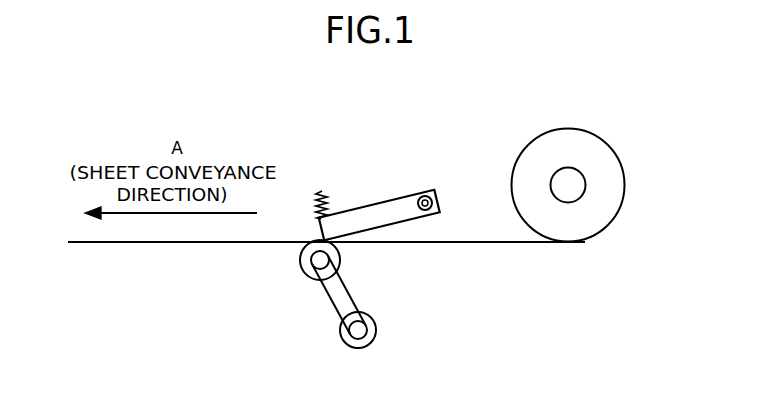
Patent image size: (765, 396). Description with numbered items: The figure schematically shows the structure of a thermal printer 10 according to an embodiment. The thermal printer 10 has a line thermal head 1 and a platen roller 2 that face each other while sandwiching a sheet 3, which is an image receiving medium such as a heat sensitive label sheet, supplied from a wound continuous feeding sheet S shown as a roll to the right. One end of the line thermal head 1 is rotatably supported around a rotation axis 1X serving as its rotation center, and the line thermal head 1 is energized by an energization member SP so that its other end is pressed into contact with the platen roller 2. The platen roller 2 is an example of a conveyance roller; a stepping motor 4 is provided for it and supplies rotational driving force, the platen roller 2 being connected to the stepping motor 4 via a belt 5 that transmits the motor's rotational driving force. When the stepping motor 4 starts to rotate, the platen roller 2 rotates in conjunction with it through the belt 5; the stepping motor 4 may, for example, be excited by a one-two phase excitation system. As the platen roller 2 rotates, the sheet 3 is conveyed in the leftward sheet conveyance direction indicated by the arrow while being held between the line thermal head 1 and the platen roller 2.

The thermal printer 10 is at (480, 110).
The line thermal head 1 is at (400, 198).
The rotation axis 1X is at (438, 198).
The energization member SP is at (323, 190).
The platen roller 2 is at (342, 257).
The sheet 3 is at (475, 243).
The stepping motor 4 is at (378, 327).
The belt 5 is at (330, 305).
The wound continuous feeding sheet S is at (624, 185).